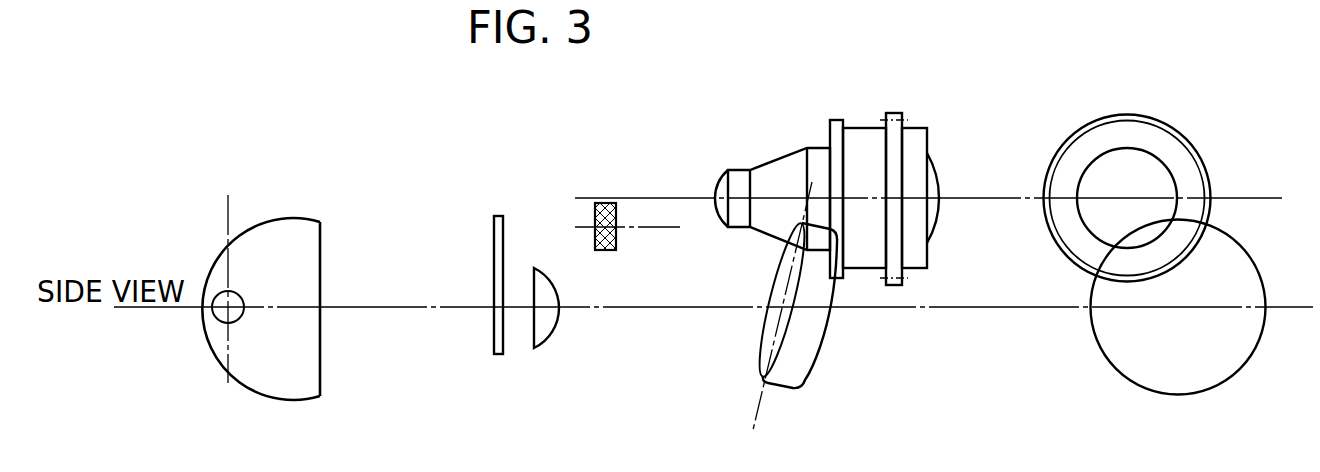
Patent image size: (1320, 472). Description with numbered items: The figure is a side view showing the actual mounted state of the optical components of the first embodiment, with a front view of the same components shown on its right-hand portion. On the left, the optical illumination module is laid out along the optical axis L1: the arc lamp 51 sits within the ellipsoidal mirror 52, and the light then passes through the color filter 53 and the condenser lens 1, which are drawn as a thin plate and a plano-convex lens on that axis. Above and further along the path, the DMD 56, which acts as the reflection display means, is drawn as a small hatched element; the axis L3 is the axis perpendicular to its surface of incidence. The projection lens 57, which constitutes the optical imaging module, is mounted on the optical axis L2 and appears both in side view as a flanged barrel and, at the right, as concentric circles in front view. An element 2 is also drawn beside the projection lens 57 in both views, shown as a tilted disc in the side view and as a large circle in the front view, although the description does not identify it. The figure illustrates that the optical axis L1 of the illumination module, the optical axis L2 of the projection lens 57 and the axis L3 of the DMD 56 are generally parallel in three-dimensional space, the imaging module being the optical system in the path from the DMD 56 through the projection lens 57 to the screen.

The condenser lens 1 is at (545, 284).
The projection lens 2 is at (815, 368).
The arc lamp 51 is at (219, 318).
The ellipsoidal mirror 52 is at (280, 224).
The color filter 53 is at (495, 338).
The DMD 56 is at (596, 204).
The projection lens 57 is at (866, 128).
The optical axis of the optical illumination module L1 is at (410, 303).
The optical axis of the projection lens L2 is at (672, 197).
The axis perpendicular to the surface of incidence of the DMD L3 is at (638, 229).